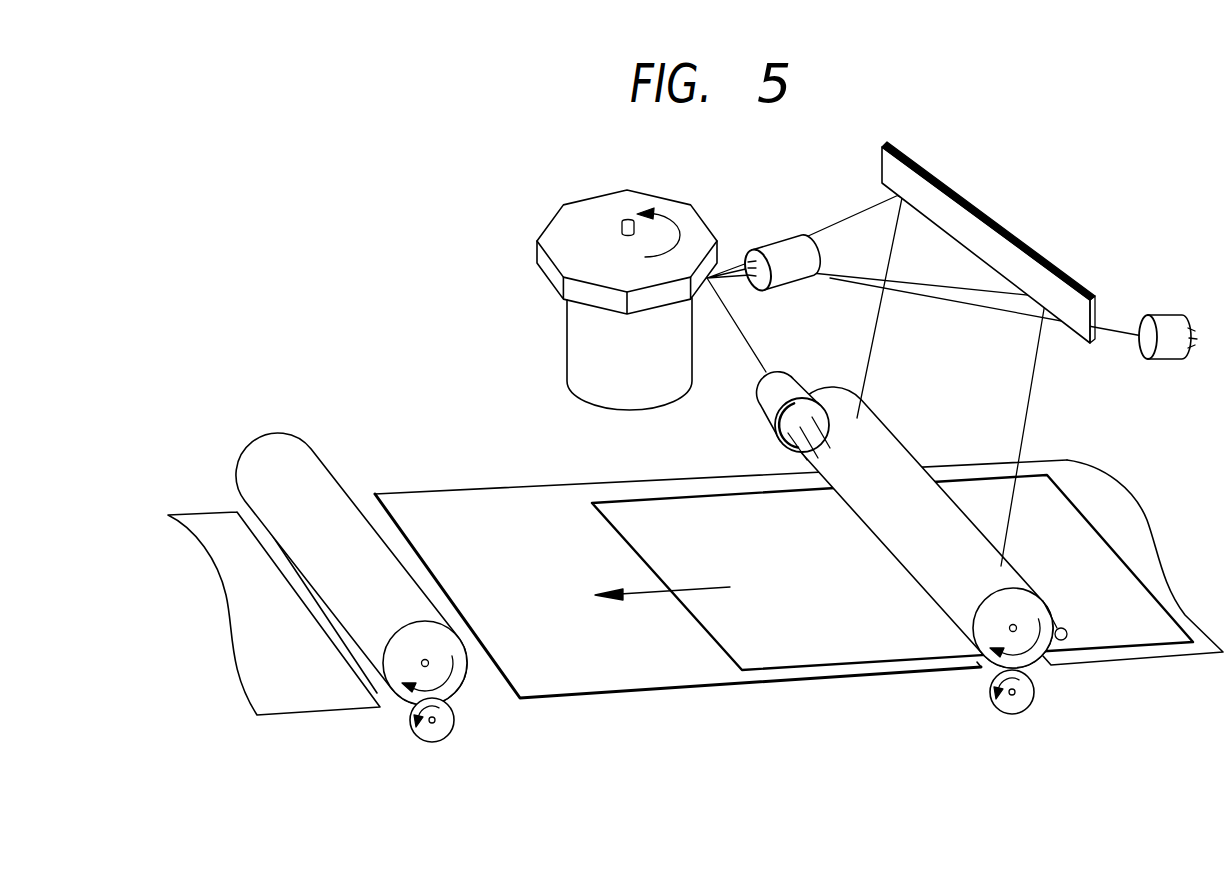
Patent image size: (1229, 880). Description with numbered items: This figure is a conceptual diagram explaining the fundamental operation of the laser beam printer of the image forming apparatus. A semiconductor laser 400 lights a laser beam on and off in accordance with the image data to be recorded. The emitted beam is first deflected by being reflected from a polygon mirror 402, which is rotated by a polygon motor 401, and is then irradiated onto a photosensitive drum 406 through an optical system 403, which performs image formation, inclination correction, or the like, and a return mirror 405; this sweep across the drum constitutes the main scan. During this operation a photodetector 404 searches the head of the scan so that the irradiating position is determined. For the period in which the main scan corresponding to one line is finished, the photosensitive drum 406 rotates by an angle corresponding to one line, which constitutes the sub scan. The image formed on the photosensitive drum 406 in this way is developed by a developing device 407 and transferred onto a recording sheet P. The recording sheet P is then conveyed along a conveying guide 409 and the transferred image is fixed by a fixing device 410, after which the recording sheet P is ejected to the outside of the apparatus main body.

The semiconductor laser 400 is at (768, 397).
The polygon motor 401 is at (582, 327).
The polygon mirror 402 is at (633, 200).
The optical system 403 is at (783, 247).
The photodetector 404 is at (1170, 323).
The return mirror 405 is at (987, 219).
The photosensitive drum 406 is at (955, 607).
The developing device 407 is at (1087, 653).
The conveying guide 409 is at (650, 668).
The fixing device 410 is at (276, 458).
The recording sheet P is at (825, 643).